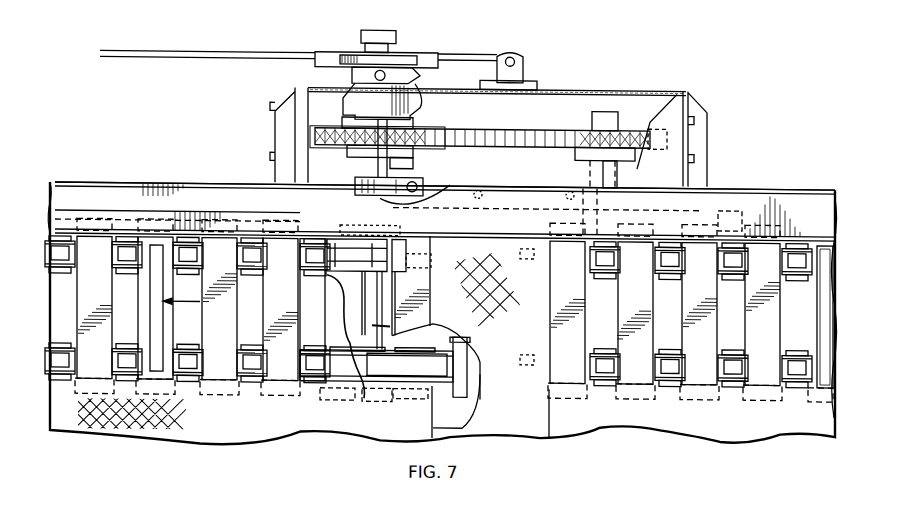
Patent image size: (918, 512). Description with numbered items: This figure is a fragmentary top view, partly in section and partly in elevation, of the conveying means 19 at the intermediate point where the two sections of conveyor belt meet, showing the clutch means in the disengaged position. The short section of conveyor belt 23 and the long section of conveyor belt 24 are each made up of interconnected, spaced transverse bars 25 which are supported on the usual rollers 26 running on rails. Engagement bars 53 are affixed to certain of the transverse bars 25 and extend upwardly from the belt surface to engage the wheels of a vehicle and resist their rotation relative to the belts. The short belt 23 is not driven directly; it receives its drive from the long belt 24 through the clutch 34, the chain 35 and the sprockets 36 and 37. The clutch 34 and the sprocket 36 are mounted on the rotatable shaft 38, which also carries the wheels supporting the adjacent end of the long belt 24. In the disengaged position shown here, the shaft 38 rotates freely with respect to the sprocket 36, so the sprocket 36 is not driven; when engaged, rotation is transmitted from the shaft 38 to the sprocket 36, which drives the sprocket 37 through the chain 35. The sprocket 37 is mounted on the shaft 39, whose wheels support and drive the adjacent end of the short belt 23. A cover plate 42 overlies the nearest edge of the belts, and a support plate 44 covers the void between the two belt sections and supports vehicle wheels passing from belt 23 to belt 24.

The conveying means 19 is at (728, 405).
The short section of conveyor belt 23 is at (720, 215).
The long section of conveyor belt 24 is at (97, 213).
The transverse bars 25 is at (812, 236).
The rollers 26 is at (608, 372).
The clutch 34 is at (358, 70).
The chain 35 is at (527, 128).
The sprocket 36 is at (308, 154).
The sprocket 37 is at (655, 126).
The shaft 38 is at (350, 178).
The shaft 39 is at (588, 108).
The cover plate 42 is at (142, 418).
The support plate 44 is at (525, 413).
The engagement bars 53 is at (157, 367).